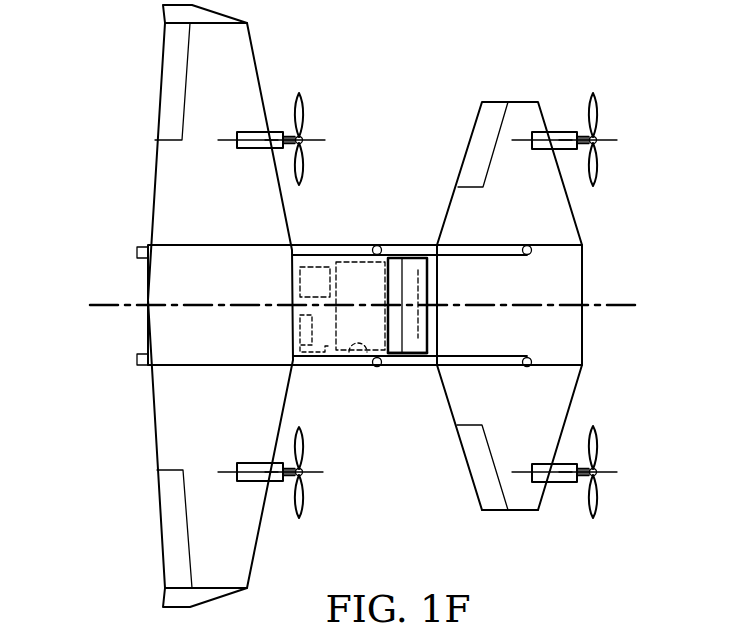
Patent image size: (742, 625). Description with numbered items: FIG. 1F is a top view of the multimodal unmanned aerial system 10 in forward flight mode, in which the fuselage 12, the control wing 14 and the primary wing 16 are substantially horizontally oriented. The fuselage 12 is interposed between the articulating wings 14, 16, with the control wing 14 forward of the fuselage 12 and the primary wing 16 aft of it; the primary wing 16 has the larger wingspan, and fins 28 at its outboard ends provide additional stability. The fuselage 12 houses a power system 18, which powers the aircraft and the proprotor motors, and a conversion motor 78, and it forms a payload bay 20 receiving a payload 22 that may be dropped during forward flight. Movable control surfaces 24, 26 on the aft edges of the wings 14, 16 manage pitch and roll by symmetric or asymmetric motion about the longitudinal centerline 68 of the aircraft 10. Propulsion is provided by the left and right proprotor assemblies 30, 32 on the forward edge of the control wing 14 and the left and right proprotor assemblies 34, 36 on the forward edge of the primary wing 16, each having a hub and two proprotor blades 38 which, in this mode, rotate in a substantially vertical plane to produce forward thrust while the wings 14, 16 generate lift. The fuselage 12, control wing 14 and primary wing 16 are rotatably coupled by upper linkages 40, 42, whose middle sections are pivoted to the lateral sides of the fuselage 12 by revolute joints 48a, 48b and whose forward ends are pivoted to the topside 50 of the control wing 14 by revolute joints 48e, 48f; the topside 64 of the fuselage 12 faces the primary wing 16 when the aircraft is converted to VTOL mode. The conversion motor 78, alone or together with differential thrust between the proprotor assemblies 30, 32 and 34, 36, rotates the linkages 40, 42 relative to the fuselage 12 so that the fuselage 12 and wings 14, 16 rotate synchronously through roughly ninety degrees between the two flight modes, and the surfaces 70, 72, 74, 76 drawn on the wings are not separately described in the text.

The multimodal unmanned aerial system 10 is at (674, 166).
The fuselage 12 is at (293, 290).
The control wing 14 is at (582, 283).
The primary wing 16 is at (158, 210).
The power system 18 is at (313, 262).
The payload bay 20 is at (352, 368).
The payload 22 is at (413, 288).
The movable control surface 24 is at (483, 502).
The movable control surface 26 is at (168, 528).
The fin 28 is at (172, 597).
The left proprotor assembly 30 is at (553, 132).
The right proprotor assembly 32 is at (553, 482).
The left proprotor assembly 34 is at (275, 128).
The right proprotor assembly 36 is at (275, 482).
The proprotor blade 38 is at (305, 108).
The upper linkage 40 is at (413, 253).
The upper linkage 42 is at (412, 366).
The revolute joint 48a is at (377, 246).
The revolute joint 48b is at (378, 367).
The revolute joint 48e is at (527, 246).
The revolute joint 48f is at (527, 367).
The topside of control wing 50 is at (573, 340).
The topside of fuselage 64 is at (305, 262).
The longitudinal centerline 68 is at (108, 303).
The upper right control surface 70 is at (518, 140).
The lower right control surface 72 is at (518, 470).
The upper left motor 74 is at (230, 140).
The lower left motor 76 is at (228, 475).
The conversion motor 78 is at (293, 327).